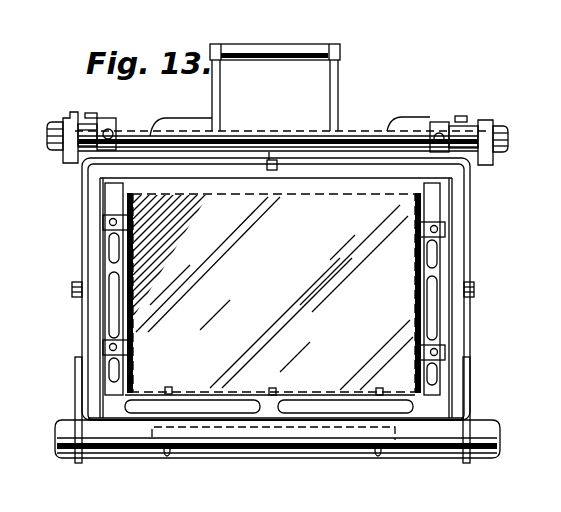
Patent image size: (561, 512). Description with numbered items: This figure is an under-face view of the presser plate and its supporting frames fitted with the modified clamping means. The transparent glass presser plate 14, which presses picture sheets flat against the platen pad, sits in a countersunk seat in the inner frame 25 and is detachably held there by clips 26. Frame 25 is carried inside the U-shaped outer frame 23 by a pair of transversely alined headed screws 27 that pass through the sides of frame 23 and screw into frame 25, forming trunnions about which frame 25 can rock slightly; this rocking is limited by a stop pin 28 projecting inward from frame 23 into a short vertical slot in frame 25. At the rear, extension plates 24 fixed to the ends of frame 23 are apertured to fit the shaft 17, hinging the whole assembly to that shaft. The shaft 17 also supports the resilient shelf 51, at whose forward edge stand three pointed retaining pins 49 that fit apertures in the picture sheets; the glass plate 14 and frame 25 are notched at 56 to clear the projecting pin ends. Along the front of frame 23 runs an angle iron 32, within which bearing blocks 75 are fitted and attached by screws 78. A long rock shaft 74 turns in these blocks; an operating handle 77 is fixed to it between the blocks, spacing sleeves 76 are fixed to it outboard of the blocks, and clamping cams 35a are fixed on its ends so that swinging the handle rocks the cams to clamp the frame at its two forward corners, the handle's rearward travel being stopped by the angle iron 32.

The operating handle 77 is at (309, 56).
The long rock shaft 74 is at (282, 140).
The angle iron 32 is at (177, 147).
The stop pin 28 is at (270, 160).
The screws 78 is at (101, 126).
The bearing blocks 75 is at (105, 136).
The spacing sleeves 76 is at (83, 128).
The clamping cams 35a is at (498, 172).
The outer frame 23 is at (84, 321).
The frame 25 is at (110, 265).
The clips 26 is at (115, 220).
The headed screws 27 is at (72, 290).
The transparent glass presser plate 14 is at (274, 283).
The shaft 17 is at (207, 441).
The shelf 51 is at (310, 462).
The extension plates 24 is at (77, 396).
The notches 56 is at (168, 394).
The retaining pins 49 is at (167, 456).